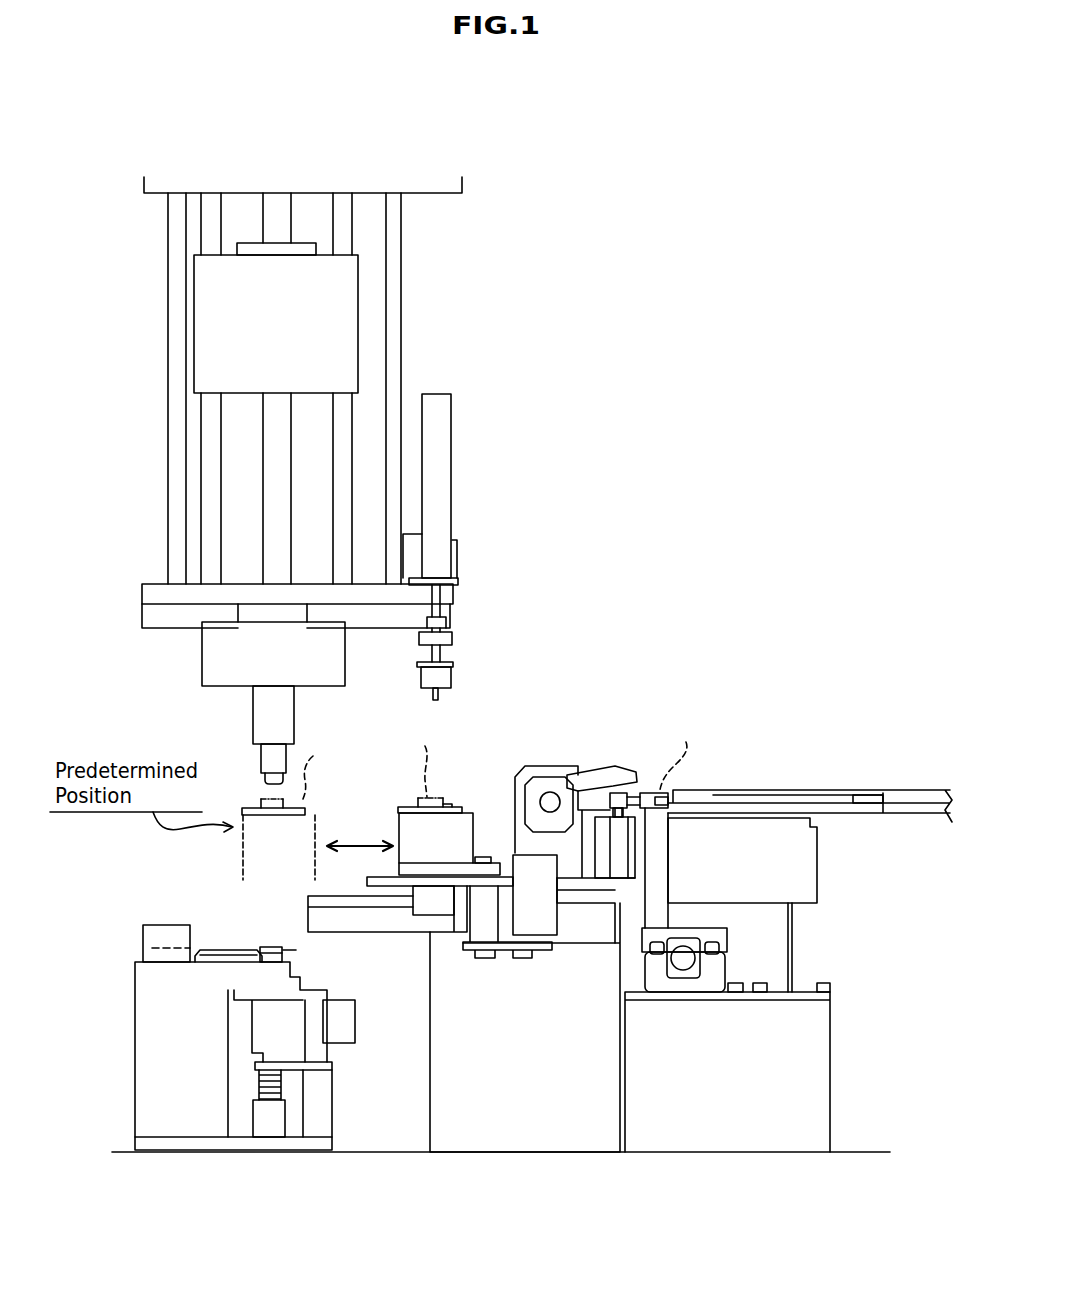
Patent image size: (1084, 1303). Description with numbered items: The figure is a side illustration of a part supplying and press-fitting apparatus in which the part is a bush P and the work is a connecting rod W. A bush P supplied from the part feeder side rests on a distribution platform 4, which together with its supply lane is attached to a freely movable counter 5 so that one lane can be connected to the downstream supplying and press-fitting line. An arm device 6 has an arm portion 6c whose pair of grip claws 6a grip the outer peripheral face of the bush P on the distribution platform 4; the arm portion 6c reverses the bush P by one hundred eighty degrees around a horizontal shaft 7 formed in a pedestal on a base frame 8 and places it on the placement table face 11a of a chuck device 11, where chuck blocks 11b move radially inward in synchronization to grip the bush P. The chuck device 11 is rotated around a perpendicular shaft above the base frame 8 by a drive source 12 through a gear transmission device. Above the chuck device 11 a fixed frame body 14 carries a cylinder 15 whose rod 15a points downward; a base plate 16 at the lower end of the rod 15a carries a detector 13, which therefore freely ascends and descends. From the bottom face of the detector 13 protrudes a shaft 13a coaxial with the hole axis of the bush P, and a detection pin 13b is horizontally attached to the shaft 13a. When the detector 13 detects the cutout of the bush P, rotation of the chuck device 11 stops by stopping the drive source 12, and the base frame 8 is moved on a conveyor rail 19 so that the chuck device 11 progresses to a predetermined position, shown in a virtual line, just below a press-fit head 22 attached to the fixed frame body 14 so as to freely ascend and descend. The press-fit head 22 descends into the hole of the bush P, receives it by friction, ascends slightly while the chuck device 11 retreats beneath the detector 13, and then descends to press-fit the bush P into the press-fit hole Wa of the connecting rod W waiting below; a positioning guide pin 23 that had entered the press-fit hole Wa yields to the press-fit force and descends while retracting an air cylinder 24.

The distribution platform 4 is at (657, 815).
The counter 5 is at (795, 862).
The arm device 6 is at (603, 763).
The grip claws 6a is at (660, 792).
The arm portion 6c is at (638, 798).
The shaft 7 is at (550, 797).
The base frame 8 is at (395, 882).
The chuck device 11 is at (242, 867).
The placement table face 11a is at (430, 807).
The chuck block 11b is at (408, 805).
The drive source 12 is at (523, 896).
The detector 13 is at (420, 698).
The shaft 13a is at (475, 711).
The detection pin 13b is at (442, 693).
The fixed frame body 14 is at (153, 590).
The cylinder 15 is at (440, 487).
The rod 15a is at (436, 597).
The base plate 16 is at (502, 653).
The conveyor rail 19 is at (362, 902).
The press-fit head 22 is at (263, 782).
The positioning guide pin 23 is at (283, 952).
The air cylinder 24 is at (270, 1120).
The connecting rod W is at (218, 948).
The press-fit hole Wa is at (272, 947).
The bush P is at (498, 757).